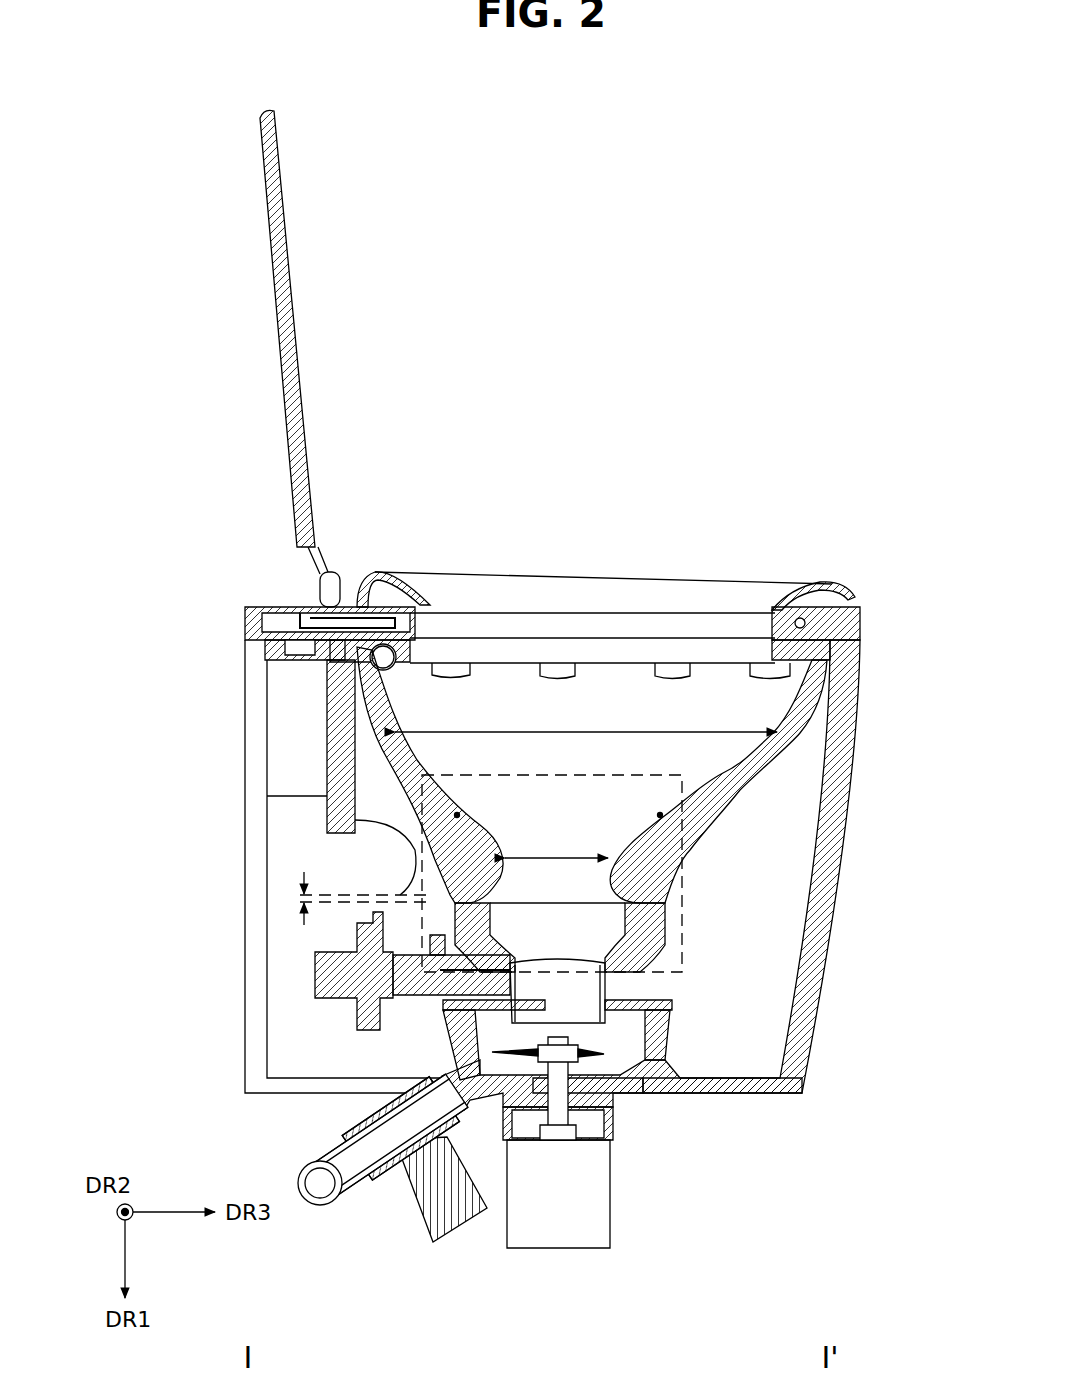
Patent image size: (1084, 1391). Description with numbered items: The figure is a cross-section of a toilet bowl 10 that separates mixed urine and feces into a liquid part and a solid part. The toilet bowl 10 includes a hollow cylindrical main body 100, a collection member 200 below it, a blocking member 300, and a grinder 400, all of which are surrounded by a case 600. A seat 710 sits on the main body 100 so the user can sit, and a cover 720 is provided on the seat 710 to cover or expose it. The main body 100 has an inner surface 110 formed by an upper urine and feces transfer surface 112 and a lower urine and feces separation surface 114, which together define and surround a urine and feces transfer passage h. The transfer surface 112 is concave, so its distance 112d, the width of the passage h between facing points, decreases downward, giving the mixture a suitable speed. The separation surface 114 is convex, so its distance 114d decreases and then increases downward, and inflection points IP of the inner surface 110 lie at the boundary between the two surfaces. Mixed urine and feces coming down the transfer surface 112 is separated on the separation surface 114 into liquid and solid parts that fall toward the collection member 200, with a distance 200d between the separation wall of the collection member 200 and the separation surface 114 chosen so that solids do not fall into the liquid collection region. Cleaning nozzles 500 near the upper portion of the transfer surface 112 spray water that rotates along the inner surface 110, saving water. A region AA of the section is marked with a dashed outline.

The toilet bowl 10 is at (800, 131).
The main body 100 is at (745, 745).
The inner surface 110 is at (592, 675).
The urine and feces transfer surface 112 is at (748, 746).
The urine and feces separation surface 114 is at (622, 840).
The collection member 200 is at (653, 963).
The blocking member 300 is at (315, 972).
The grinder 400 is at (583, 1070).
The cleaning nozzles 500 is at (383, 668).
The case 600 is at (825, 864).
The seat 710 is at (828, 580).
The cover 720 is at (283, 172).
The region AA is at (690, 915).
The inflection points IP is at (556, 800).
The distance of the urine and feces transfer surface 112d is at (586, 717).
The distance of the urine and feces separation surface 114d is at (556, 842).
The distance between the separation wall and the urine and feces separation surface 200d is at (300, 893).
The urine and feces transfer passage h is at (549, 889).